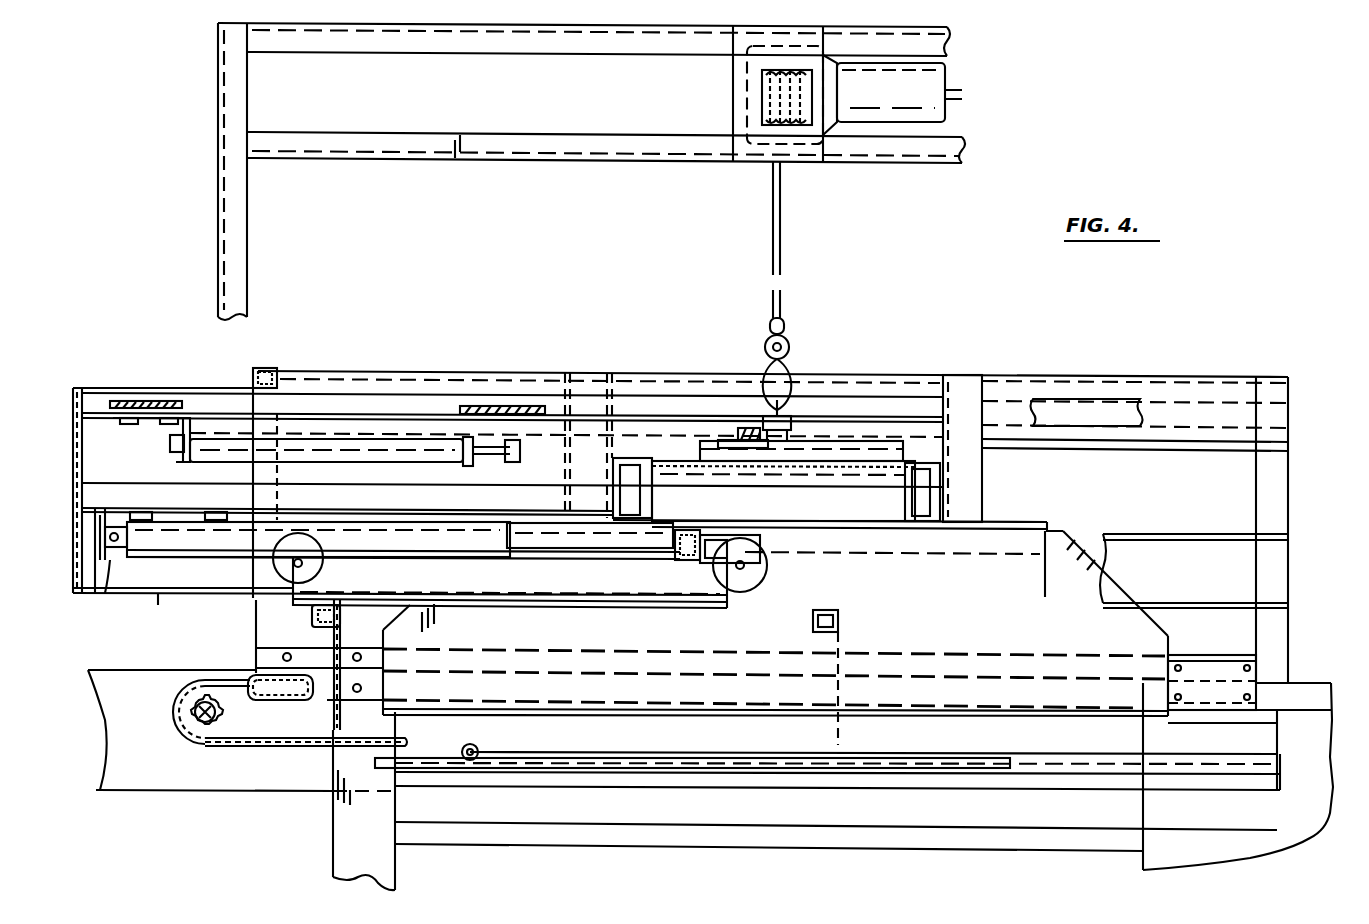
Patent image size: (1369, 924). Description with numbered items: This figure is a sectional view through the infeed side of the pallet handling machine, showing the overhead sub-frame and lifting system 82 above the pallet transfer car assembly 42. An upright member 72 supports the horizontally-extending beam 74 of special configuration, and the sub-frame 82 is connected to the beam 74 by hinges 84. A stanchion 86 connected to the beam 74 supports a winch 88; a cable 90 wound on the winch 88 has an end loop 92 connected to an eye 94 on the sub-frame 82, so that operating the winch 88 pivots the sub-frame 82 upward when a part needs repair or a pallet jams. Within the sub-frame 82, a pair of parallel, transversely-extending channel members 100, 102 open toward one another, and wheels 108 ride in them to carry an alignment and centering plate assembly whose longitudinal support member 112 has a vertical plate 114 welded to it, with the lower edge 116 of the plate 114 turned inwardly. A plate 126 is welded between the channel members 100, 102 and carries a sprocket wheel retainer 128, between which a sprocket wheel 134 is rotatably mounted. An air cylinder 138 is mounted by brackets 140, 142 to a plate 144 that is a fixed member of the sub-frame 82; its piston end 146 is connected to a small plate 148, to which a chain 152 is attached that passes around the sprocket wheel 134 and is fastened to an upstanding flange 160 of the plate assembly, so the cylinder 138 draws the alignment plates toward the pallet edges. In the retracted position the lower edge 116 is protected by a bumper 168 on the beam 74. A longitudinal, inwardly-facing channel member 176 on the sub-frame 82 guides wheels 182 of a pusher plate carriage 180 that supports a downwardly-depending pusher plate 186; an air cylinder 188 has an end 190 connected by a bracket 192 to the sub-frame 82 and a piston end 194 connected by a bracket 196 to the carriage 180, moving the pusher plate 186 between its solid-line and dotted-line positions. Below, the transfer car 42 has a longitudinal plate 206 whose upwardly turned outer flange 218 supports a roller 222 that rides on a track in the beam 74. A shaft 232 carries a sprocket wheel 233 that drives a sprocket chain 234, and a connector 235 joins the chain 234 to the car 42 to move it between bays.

The pallet transfer car assembly 42 is at (700, 790).
The upright member 72 is at (333, 840).
The beam 74 is at (1028, 788).
The overhead sub-frame and lifting system 82 is at (1140, 373).
The hinges 84 is at (270, 645).
The stanchion 86 is at (520, 168).
The winch 88 is at (948, 78).
The cable 90 is at (783, 305).
The end loop 92 is at (790, 350).
The eye 94 is at (792, 416).
The channel member 100 is at (572, 440).
The channel member 102 is at (965, 500).
The wheels 108 is at (640, 497).
The longitudinal support member 112 is at (1020, 522).
The vertical plate 114 is at (1075, 560).
The lower edge 116 is at (1025, 715).
The plate 126 is at (852, 475).
The sprocket wheel retainer 128 is at (742, 425).
The sprocket wheel 134 is at (770, 437).
The air cylinder 138 is at (352, 440).
The bracket 140 is at (140, 432).
The bracket 142 is at (490, 436).
The plate 144 is at (210, 412).
The piston end 146 is at (490, 405).
The small plate 148 is at (515, 462).
The chain 152 is at (625, 450).
The upstanding flange 160 is at (880, 450).
The bumper 168 is at (1275, 725).
The channel member 176 is at (1180, 535).
The pusher plate carriage 180 is at (512, 600).
The wheels 182 is at (275, 572).
The pusher plate 186 is at (338, 622).
The air cylinder 188 is at (160, 555).
The end 190 is at (120, 590).
The bracket 192 is at (95, 593).
The piston end 194 is at (700, 530).
The bracket 196 is at (762, 548).
The longitudinal plate 206 is at (410, 770).
The outer flange 218 is at (670, 752).
The roller 222 is at (482, 748).
The shaft 232 is at (208, 724).
The sprocket wheel 233 is at (180, 722).
The sprocket chain 234 is at (288, 748).
The connector 235 is at (432, 725).